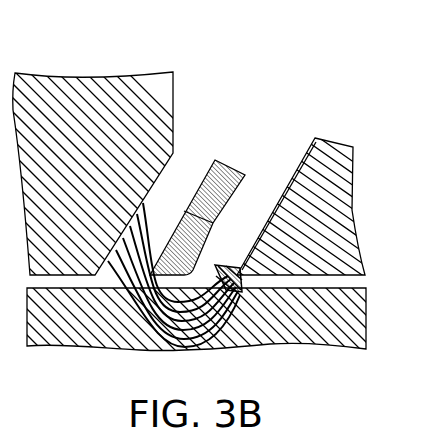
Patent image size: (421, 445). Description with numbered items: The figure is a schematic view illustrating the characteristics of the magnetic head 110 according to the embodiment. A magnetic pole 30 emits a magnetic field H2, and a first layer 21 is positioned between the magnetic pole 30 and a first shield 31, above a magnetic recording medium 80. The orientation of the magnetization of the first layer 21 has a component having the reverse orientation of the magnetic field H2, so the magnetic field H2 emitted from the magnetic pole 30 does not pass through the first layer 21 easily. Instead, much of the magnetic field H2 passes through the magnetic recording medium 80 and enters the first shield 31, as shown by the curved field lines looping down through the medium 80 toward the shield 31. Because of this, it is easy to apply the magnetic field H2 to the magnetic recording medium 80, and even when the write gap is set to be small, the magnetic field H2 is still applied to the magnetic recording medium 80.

The magnetic pole 30 is at (65, 81).
The magnetic head 110 is at (311, 68).
The magnetic field H2 is at (148, 220).
The first layer 21 is at (230, 168).
The first shield 31 is at (326, 140).
The magnetic recording medium 80 is at (323, 338).